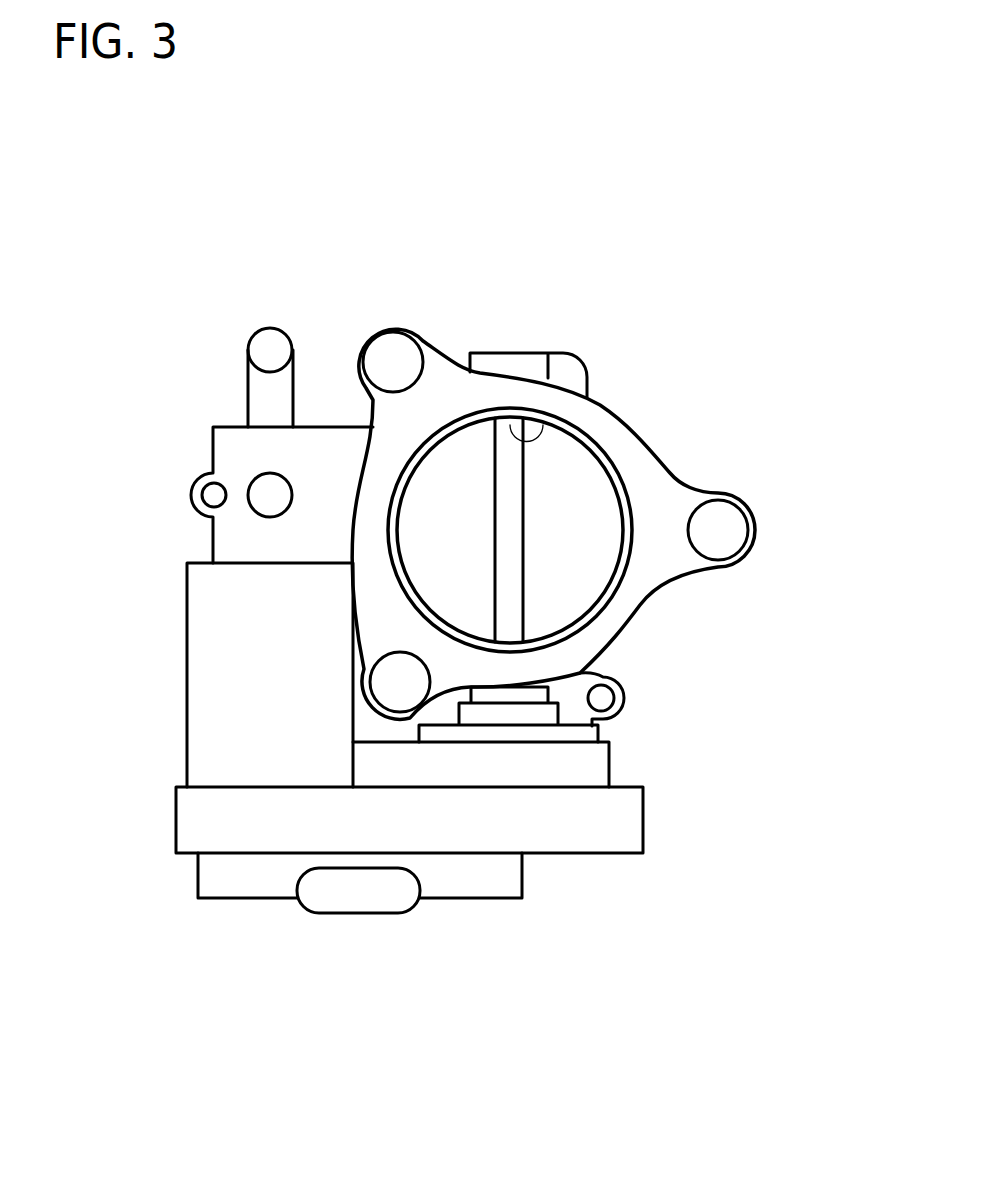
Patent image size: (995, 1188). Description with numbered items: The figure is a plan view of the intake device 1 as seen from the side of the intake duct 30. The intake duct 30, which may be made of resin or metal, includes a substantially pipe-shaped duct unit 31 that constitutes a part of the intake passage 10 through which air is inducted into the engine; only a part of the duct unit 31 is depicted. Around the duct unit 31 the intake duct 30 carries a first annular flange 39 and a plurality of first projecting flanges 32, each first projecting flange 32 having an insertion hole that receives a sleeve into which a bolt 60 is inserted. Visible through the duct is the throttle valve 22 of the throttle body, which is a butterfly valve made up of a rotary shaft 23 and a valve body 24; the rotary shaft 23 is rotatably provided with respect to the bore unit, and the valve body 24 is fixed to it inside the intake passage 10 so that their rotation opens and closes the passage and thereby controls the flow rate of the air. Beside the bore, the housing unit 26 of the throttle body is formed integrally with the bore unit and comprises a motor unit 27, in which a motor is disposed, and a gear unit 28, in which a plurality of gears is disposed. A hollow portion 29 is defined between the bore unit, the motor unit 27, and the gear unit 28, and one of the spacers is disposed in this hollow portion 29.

The intake device 1 is at (744, 330).
The intake passage 10 is at (510, 420).
The throttle valve 22 is at (549, 442).
The rotary shaft 23 is at (512, 482).
The valve body 24 is at (576, 487).
The housing unit 26 is at (417, 970).
The motor unit 27 is at (325, 775).
The gear unit 28 is at (415, 775).
The hollow portion 29 is at (383, 733).
The intake duct 30 is at (700, 466).
The duct unit 31 is at (625, 550).
The first projecting flange 32 is at (385, 327).
The first annular flange 39 is at (630, 607).
The bolt 60 is at (383, 372).